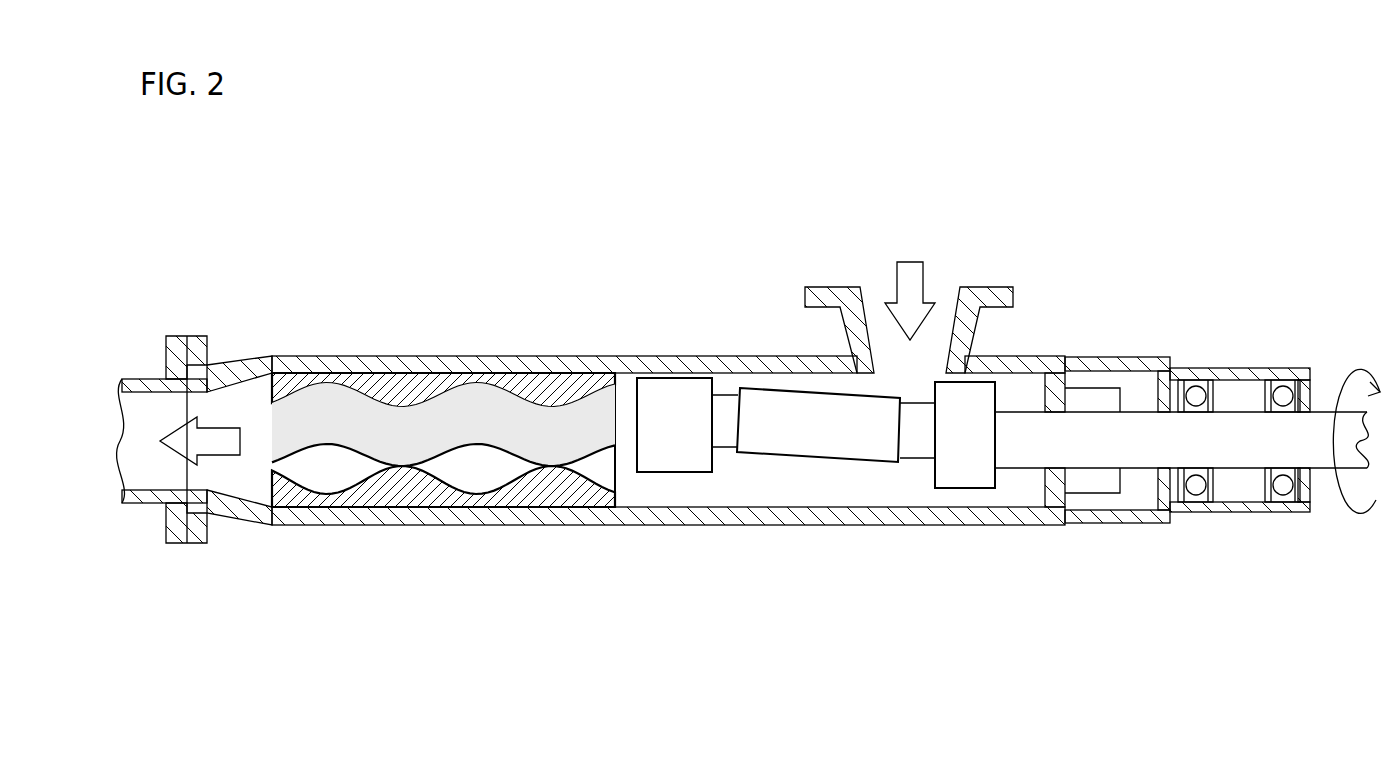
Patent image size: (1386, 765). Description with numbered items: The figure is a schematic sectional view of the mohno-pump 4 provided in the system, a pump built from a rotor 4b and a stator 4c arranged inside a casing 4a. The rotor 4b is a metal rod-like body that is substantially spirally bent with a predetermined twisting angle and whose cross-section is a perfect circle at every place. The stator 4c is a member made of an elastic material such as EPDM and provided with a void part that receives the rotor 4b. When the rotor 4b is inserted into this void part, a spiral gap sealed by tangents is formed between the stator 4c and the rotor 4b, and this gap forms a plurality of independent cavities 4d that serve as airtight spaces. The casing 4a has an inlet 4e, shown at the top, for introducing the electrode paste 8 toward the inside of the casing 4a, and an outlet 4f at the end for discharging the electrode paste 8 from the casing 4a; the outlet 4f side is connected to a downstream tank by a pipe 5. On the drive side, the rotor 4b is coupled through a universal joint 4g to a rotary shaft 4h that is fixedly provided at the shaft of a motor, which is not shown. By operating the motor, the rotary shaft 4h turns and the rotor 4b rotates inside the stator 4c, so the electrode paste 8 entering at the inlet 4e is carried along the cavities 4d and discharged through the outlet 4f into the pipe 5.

The mohno-pump 4 is at (807, 622).
The casing 4a is at (745, 510).
The rotor 4b is at (470, 407).
The stator 4c is at (410, 493).
The cavities 4d is at (481, 468).
The inlet 4e is at (863, 298).
The outlet 4f is at (218, 500).
The universal joint 4g is at (673, 473).
The rotary shaft 4h is at (1135, 447).
The pipe 5 is at (143, 522).
The electrode paste 8 is at (537, 345).